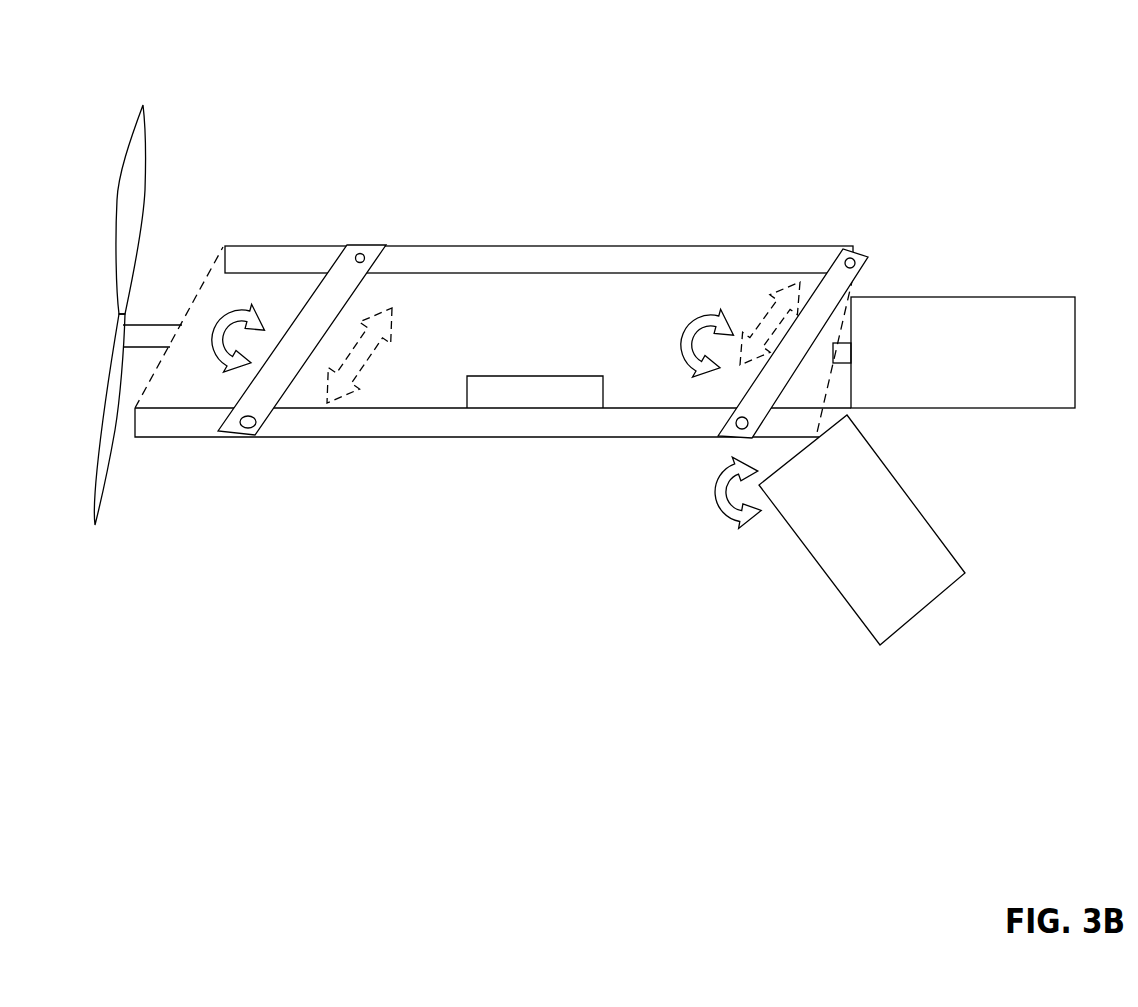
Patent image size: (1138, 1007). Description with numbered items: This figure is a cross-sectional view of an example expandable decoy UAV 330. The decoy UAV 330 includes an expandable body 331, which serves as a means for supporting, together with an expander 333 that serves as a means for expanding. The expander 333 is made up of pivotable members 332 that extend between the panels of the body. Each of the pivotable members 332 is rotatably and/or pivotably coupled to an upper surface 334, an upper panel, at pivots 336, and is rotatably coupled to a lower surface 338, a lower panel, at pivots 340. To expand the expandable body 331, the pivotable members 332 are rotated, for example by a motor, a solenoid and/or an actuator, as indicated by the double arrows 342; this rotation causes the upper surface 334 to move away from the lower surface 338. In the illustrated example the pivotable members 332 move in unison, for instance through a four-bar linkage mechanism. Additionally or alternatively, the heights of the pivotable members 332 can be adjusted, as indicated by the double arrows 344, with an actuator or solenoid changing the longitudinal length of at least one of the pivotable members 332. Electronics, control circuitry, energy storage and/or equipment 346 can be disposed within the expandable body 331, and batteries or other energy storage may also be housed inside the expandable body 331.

The decoy UAV 330 is at (285, 52).
The expandable body 331 is at (307, 132).
The expander 333 is at (348, 222).
The pivotable members 332 is at (278, 373).
The upper surface 334 is at (600, 255).
The pivots 336 is at (364, 247).
The lower surface 338 is at (462, 437).
The pivots 340 is at (247, 431).
The double arrows 342 is at (213, 332).
The double arrows 344 is at (392, 308).
The equipment 346 is at (563, 382).